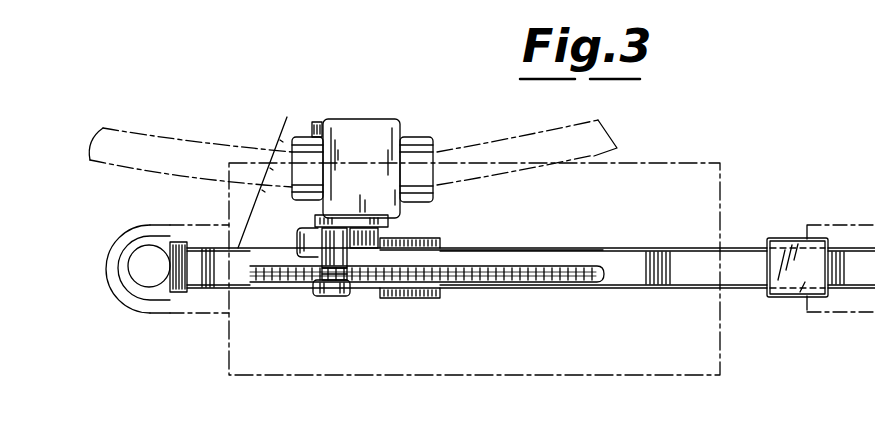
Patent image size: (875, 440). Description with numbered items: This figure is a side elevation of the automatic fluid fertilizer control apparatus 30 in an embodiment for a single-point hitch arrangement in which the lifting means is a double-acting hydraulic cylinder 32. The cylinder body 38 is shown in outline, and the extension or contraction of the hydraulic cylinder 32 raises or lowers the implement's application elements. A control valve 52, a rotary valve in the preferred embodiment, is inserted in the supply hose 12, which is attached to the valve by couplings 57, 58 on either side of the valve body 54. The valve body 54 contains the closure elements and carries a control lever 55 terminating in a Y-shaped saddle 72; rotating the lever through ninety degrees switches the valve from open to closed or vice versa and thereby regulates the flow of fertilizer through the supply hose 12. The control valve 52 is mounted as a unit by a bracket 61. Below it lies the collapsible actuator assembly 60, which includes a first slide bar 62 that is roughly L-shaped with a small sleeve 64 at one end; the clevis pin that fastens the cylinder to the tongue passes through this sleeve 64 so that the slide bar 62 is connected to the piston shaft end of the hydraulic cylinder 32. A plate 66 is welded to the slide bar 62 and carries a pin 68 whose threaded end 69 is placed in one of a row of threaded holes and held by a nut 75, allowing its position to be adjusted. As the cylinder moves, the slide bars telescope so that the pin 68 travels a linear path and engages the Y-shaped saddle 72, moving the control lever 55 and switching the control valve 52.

The supply hose 12 is at (136, 172).
The automatic fluid fertilizer control apparatus 30 is at (779, 208).
The double-acting hydraulic cylinder 32 is at (490, 243).
The hydraulic cylinder body 38 is at (637, 162).
The control valve 52 is at (355, 146).
The valve body 54 is at (376, 169).
The control lever 55 is at (386, 240).
The coupling 57 is at (422, 137).
The coupling 58 is at (296, 147).
The collapsible actuator assembly 60 is at (694, 286).
The bracket 61 is at (268, 196).
The first slide bar 62 is at (634, 247).
The small sleeve 64 is at (232, 280).
The plate 66 is at (521, 271).
The pin 68 is at (328, 247).
The threaded end 69 is at (326, 271).
The Y-shaped saddle 72 is at (297, 241).
The nut 75 is at (320, 296).